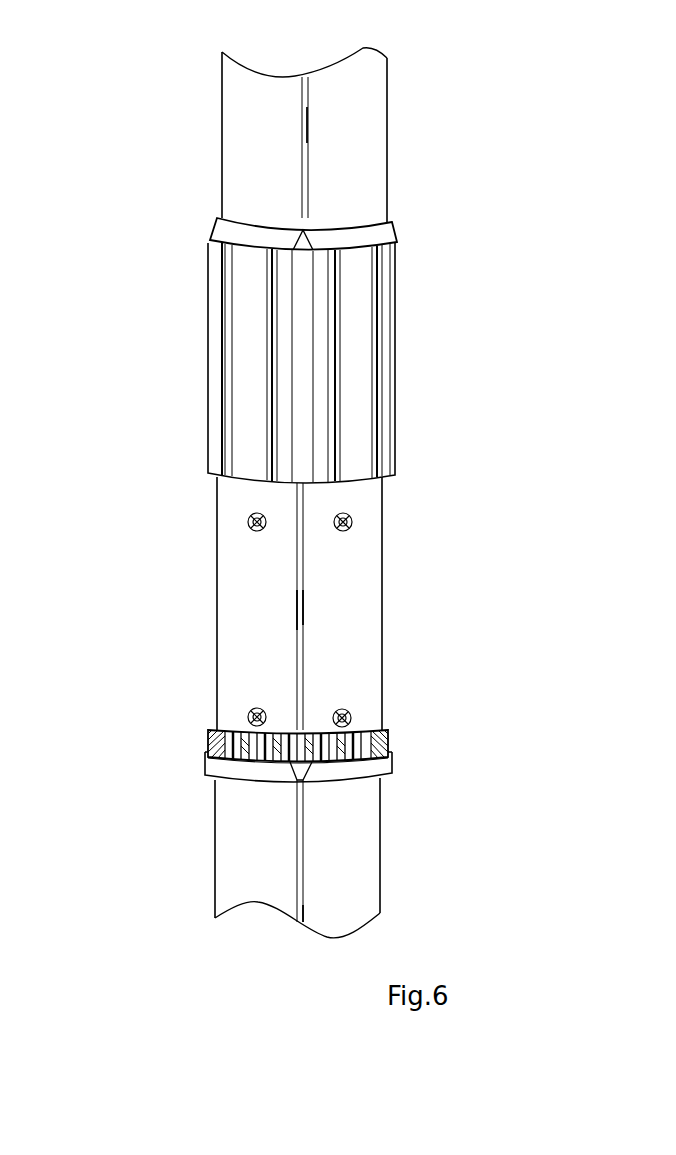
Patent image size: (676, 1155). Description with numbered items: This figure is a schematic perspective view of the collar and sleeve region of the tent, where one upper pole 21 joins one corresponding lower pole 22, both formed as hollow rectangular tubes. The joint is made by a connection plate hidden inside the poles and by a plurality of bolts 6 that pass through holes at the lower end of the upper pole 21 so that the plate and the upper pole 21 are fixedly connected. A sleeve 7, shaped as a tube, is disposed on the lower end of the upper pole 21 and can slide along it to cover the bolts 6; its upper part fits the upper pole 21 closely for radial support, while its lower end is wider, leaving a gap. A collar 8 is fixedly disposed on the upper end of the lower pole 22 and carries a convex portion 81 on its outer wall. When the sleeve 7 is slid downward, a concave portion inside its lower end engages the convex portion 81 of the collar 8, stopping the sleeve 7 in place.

The upper pole 21 is at (347, 187).
The sleeve 7 is at (242, 345).
The bolts 6 is at (248, 524).
The convex portion 81 is at (210, 736).
The collar 8 is at (392, 770).
The lower pole 22 is at (263, 837).